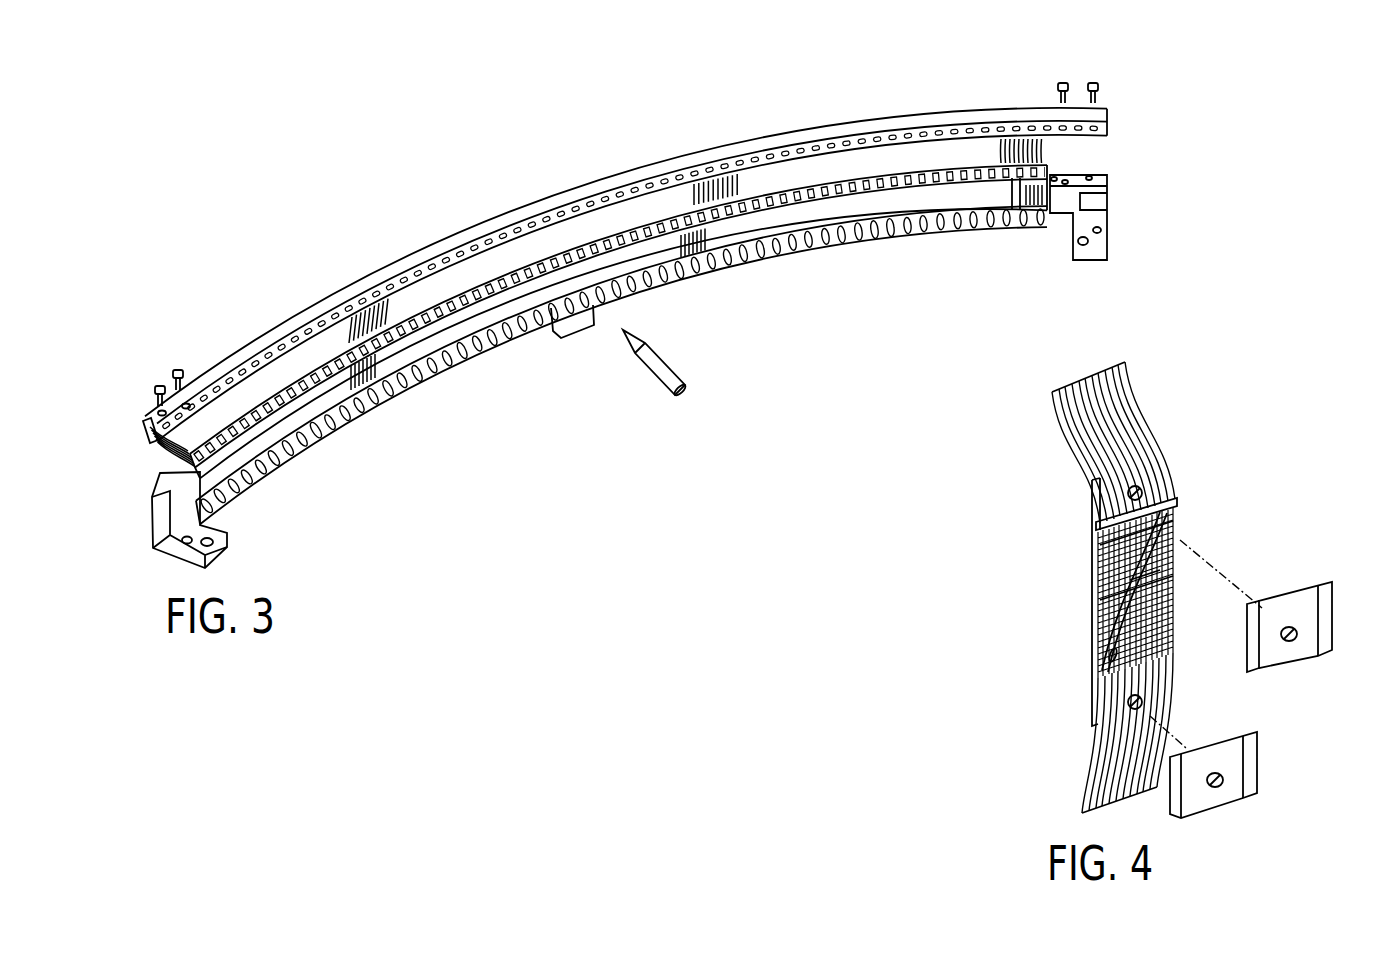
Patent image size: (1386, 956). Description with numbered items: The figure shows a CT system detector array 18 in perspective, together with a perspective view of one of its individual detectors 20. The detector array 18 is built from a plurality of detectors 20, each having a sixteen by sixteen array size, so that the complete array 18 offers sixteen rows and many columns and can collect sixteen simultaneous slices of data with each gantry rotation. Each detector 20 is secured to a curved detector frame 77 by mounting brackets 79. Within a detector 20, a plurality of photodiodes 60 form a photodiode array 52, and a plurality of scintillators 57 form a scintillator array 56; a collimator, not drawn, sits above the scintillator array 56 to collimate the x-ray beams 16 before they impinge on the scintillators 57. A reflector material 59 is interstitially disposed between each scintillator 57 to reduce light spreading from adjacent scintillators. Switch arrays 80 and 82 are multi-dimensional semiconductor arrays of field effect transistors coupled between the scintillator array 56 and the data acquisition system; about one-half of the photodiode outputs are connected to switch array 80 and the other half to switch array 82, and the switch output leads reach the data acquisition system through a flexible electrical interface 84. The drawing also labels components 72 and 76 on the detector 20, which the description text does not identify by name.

In FIG. 3, the x-ray beams 16 is at (663, 378).
In FIG. 3, the detector array 18 is at (502, 200).
In FIG. 3, the detector 20 is at (357, 305).
In FIG. 4, the detector 20 is at (1272, 423).
In FIG. 3, the photodiode array 52 is at (1058, 160).
In FIG. 4, the photodiode array 52 is at (1080, 617).
In FIG. 3, the scintillator array 56 is at (945, 202).
In FIG. 4, the scintillator array 56 is at (1200, 580).
In FIG. 4, the scintillators 57 is at (1182, 660).
In FIG. 4, the reflector material 59 is at (1173, 558).
In FIG. 4, the photodiodes 60 is at (1106, 598).
In FIG. 4, the contact pad grid 72 is at (1185, 514).
In FIG. 4, the stiffener bar 76 is at (1174, 503).
In FIG. 3, the detector frame 77 is at (190, 462).
In FIG. 4, the mounting brackets 79 is at (1315, 600).
In FIG. 4, the switch array 80 is at (1097, 530).
In FIG. 4, the switch array 82 is at (1172, 678).
In FIG. 4, the flexible electrical interface 84 is at (1167, 430).